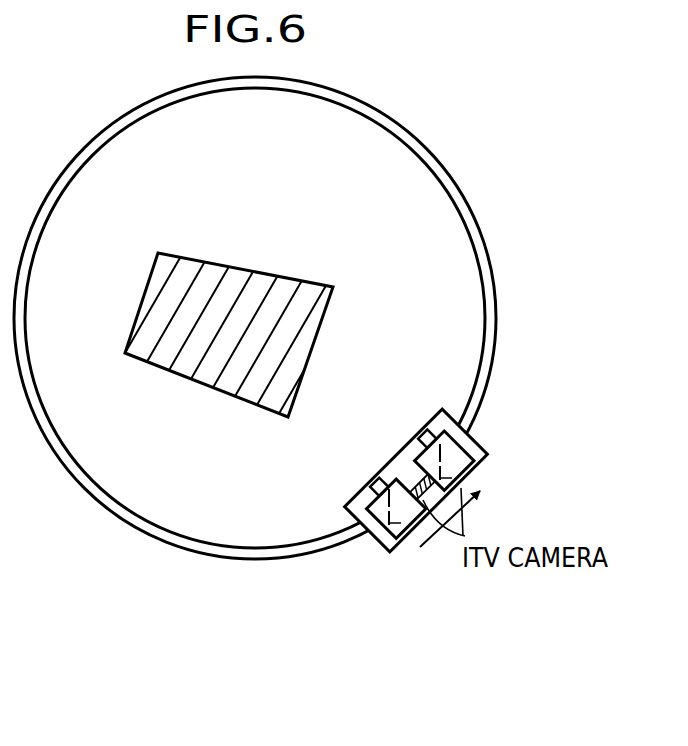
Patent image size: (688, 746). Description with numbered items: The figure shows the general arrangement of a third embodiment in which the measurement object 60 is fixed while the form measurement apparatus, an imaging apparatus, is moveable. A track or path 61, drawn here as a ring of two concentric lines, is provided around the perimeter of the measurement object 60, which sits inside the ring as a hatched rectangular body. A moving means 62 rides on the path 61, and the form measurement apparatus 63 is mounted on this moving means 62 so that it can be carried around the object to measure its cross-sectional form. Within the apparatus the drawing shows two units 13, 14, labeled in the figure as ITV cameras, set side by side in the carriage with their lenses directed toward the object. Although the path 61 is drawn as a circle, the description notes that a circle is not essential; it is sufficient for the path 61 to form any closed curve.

The measurement object 60 is at (290, 275).
The track or path 61 is at (468, 207).
The moving means 62 is at (490, 455).
The form measurement apparatus 63 is at (392, 555).
The first ITV camera 13 is at (368, 530).
The second ITV camera 14 is at (472, 450).